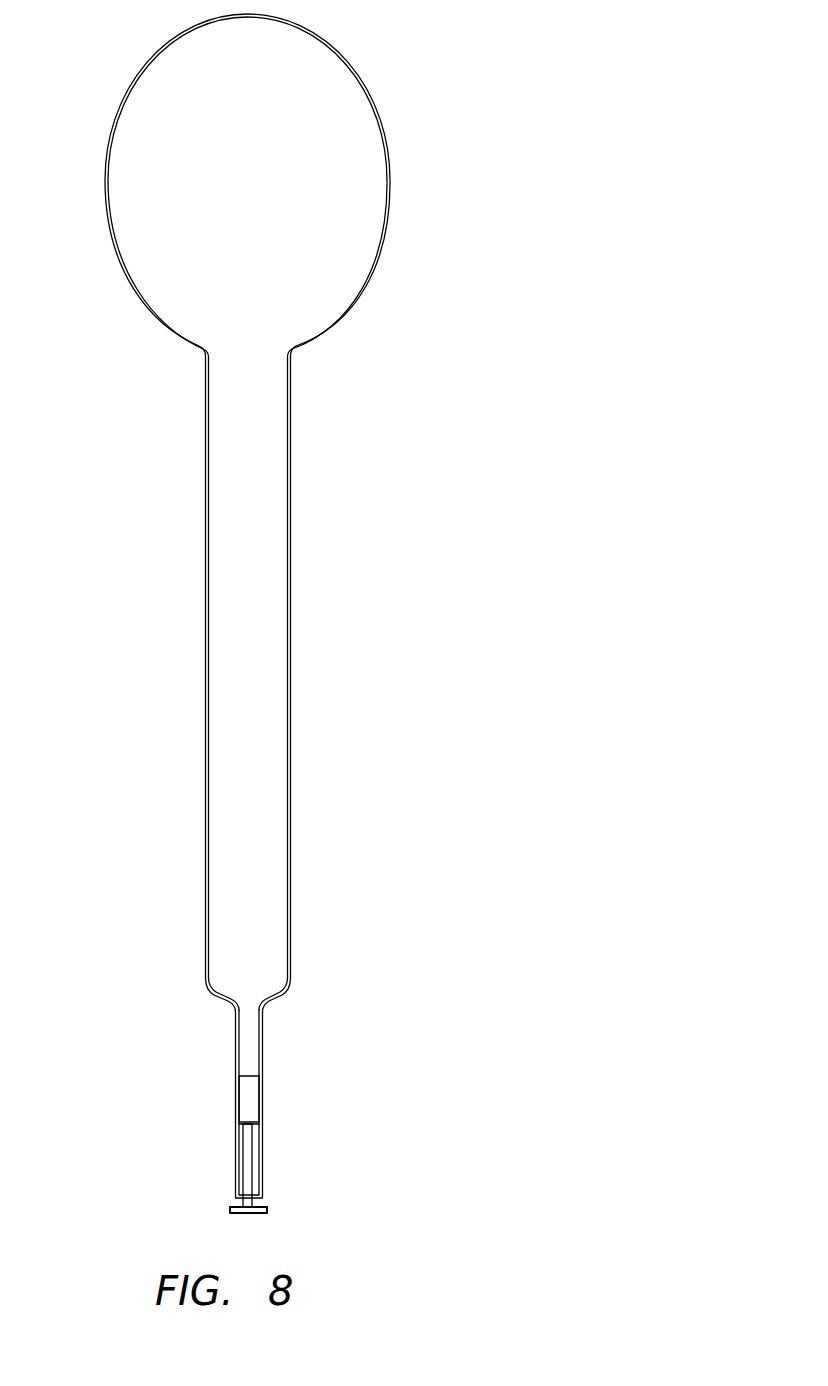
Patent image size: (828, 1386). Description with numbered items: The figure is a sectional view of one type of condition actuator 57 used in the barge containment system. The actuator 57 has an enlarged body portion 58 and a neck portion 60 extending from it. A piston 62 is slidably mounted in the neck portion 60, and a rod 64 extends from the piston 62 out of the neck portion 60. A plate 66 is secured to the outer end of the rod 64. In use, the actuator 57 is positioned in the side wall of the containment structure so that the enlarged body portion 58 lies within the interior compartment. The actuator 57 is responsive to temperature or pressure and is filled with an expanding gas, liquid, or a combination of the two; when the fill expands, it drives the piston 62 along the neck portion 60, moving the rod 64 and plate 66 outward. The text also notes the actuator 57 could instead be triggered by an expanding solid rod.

The condition actuator 57 is at (150, 564).
The body portion 58 is at (350, 240).
The neck portion 60 is at (263, 1048).
The piston 62 is at (252, 1098).
The rod 64 is at (248, 1150).
The plate 66 is at (267, 1210).